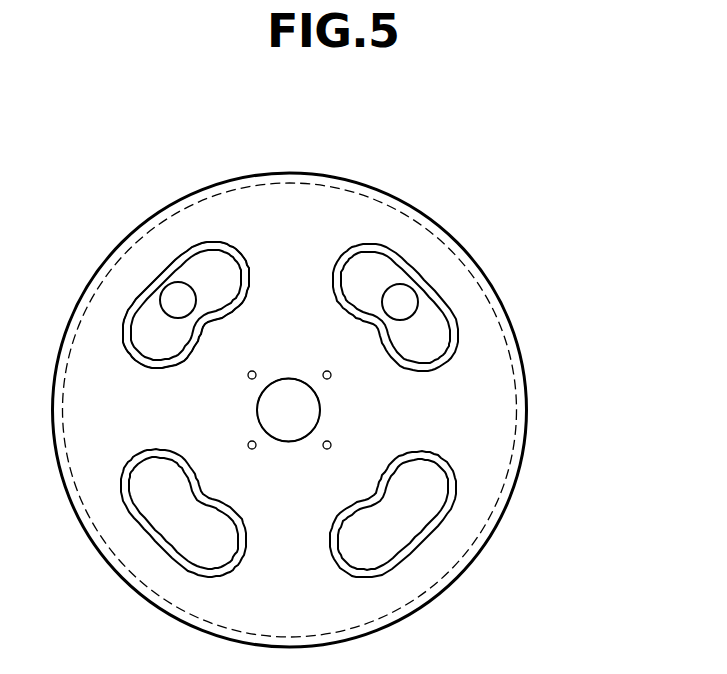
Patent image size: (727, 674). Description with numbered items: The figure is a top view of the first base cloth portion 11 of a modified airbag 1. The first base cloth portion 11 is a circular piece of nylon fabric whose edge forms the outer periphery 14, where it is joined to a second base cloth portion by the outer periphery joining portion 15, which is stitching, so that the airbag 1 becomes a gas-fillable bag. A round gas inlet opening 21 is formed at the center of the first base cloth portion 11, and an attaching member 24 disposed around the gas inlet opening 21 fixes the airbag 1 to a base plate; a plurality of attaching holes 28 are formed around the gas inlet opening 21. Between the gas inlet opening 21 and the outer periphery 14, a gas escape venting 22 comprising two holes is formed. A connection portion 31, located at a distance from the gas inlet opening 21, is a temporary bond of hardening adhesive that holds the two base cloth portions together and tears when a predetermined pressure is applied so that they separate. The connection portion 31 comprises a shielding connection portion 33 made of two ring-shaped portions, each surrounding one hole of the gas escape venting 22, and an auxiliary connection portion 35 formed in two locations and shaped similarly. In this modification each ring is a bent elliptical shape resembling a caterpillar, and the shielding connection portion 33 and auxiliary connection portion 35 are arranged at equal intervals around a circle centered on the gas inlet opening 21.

The airbag 1 is at (523, 119).
The first base cloth portion 11 is at (485, 360).
The outer periphery 14 is at (527, 428).
The outer periphery joining portion 15 is at (527, 383).
The gas inlet opening 21 is at (313, 411).
The gas escape venting 22 is at (173, 298).
The attaching member 24 is at (290, 442).
The attaching holes 28 is at (332, 446).
The connection portion 31 is at (178, 236).
The shielding connection portion 33 is at (204, 236).
The auxiliary connection portion 35 is at (160, 553).